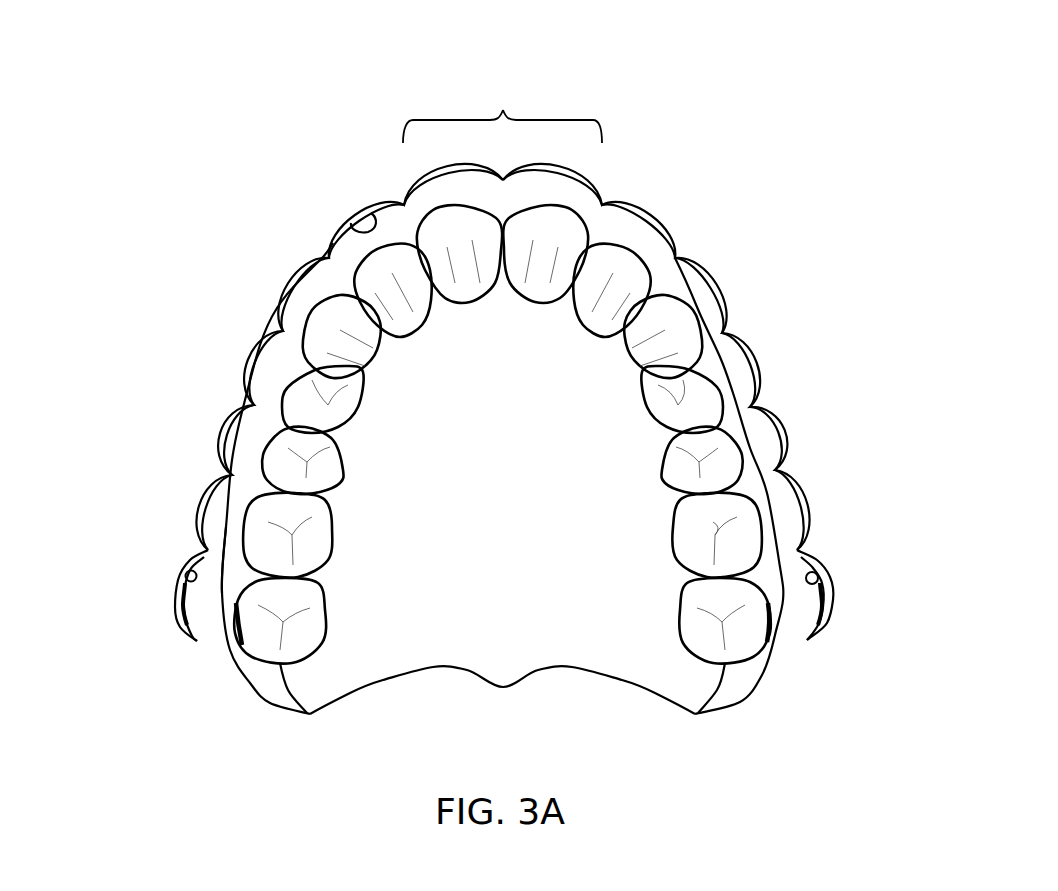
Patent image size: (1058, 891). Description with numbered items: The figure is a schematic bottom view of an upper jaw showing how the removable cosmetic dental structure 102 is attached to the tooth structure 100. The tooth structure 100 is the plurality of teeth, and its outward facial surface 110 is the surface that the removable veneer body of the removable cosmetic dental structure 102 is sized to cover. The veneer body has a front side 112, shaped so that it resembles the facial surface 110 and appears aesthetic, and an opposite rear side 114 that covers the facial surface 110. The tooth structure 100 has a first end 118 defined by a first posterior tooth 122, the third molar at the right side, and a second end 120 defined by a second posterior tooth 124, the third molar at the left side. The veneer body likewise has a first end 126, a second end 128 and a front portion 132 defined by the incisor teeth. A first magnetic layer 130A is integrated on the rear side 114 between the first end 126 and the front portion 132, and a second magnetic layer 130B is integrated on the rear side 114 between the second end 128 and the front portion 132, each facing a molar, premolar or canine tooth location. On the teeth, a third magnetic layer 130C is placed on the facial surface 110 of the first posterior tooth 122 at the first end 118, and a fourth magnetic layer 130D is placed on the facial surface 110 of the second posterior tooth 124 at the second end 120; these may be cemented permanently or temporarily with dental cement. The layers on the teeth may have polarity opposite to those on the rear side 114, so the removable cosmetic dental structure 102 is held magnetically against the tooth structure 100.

The tooth structure 100 is at (637, 249).
The removable cosmetic dental structure 102 is at (328, 211).
The facial surface 110 is at (247, 531).
The front side 112 is at (283, 293).
The rear side 114 is at (371, 213).
The first end 118 is at (241, 581).
The second end 120 is at (762, 572).
The first posterior tooth 122 is at (307, 713).
The second posterior tooth 124 is at (698, 713).
The first end 126 is at (167, 592).
The second end 128 is at (838, 594).
The first magnetic layer 130A is at (185, 574).
The second magnetic layer 130B is at (818, 576).
The third magnetic layer 130C is at (236, 628).
The fourth magnetic layer 130D is at (772, 628).
The front portion 132 is at (503, 110).